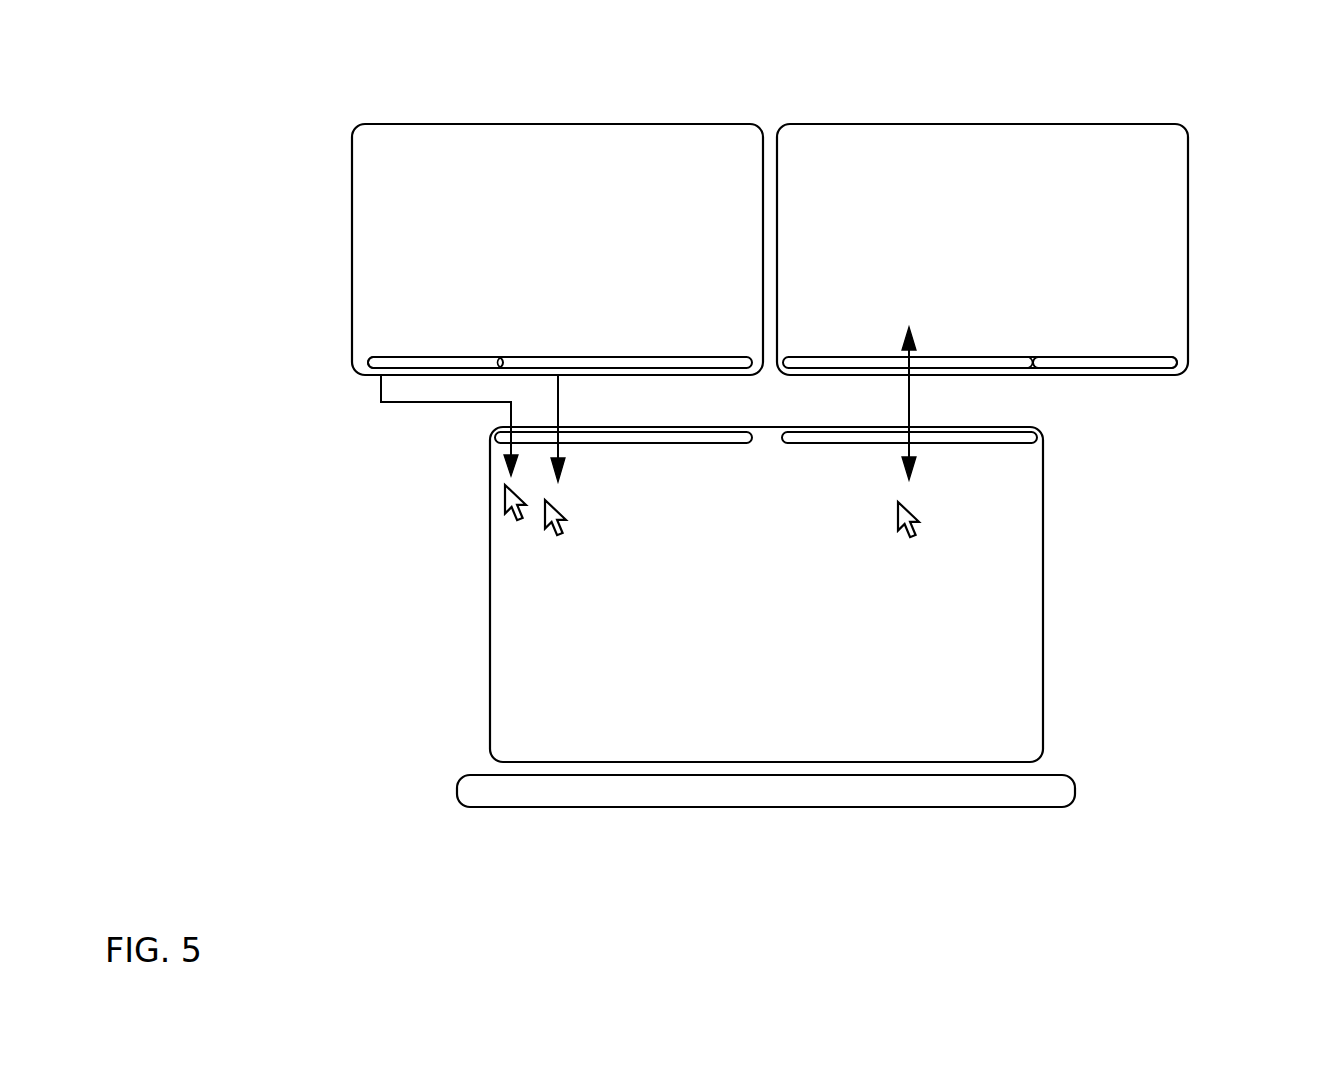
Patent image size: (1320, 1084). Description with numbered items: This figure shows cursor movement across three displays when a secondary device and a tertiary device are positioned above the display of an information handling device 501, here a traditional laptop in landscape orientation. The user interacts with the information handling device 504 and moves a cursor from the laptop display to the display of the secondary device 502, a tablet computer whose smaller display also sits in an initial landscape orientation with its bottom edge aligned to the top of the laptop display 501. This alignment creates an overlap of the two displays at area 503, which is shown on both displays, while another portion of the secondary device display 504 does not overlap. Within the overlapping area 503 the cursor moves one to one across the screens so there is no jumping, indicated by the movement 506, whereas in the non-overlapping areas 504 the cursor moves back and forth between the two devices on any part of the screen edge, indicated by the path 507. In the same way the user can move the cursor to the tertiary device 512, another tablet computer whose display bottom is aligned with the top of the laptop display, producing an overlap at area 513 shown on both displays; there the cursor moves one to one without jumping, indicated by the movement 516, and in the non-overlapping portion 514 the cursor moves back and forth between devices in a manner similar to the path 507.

The display of the information handling device 501 is at (450, 525).
The secondary device 502 is at (322, 212).
The overlap area 503 is at (650, 345).
The non-overlapping portion of the secondary device display 504 is at (393, 343).
The one-to-one cursor movement 506 is at (545, 402).
The back-and-forth cursor movement at screen edge 507 is at (370, 397).
The tertiary device 512 is at (1207, 231).
The overlap area 513 is at (956, 342).
The non-overlapping portion of the tertiary device display 514 is at (1120, 337).
The one-to-one cursor movement 516 is at (950, 397).